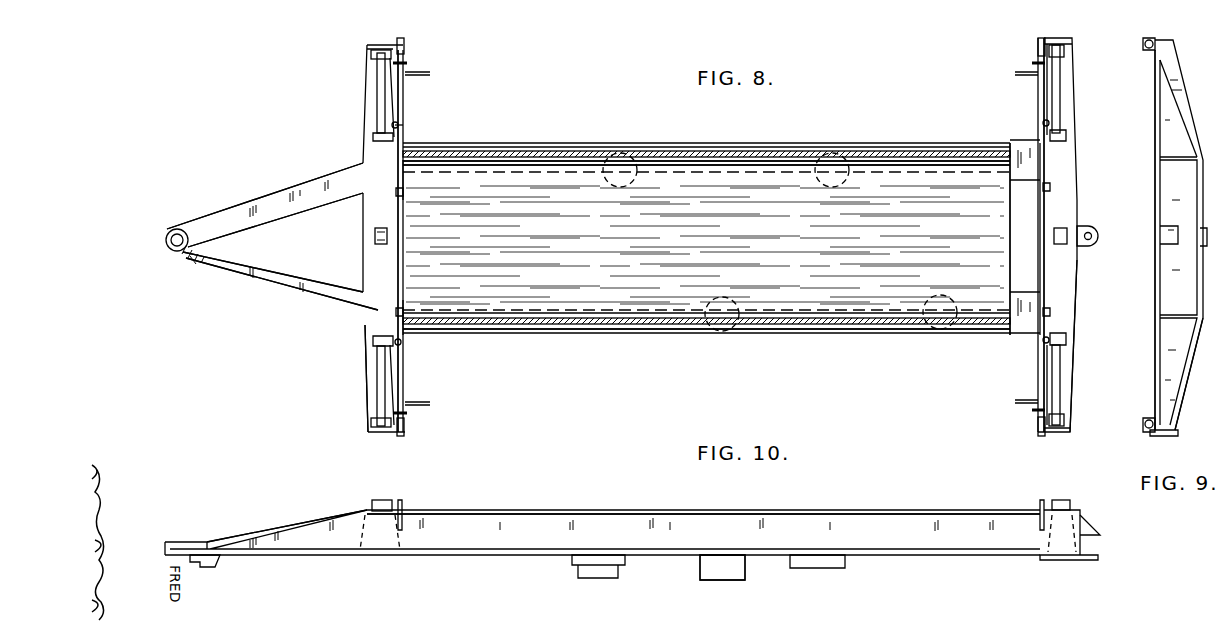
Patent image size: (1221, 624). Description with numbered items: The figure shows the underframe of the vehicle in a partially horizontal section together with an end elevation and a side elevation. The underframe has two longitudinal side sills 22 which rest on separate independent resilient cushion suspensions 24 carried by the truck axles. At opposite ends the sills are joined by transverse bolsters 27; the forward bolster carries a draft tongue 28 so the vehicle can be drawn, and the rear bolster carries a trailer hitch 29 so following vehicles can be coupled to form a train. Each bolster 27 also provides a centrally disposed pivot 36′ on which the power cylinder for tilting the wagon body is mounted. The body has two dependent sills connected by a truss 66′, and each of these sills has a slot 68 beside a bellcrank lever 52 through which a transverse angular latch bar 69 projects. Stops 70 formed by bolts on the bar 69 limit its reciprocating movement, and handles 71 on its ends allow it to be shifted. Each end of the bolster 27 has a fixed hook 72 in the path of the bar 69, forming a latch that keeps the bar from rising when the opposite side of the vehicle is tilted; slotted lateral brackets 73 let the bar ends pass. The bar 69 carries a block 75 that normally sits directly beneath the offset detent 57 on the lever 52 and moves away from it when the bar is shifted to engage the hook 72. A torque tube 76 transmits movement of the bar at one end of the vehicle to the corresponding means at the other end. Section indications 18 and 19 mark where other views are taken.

In FIG. 8, the section line 18 is at (365, 350).
In FIG. 8, the section line 19 is at (563, 285).
In FIG. 8, the side sill 22 is at (1025, 320).
In FIG. 10, the side sill 22 is at (460, 548).
In FIG. 8, the resilient cushion suspension 24 is at (612, 180).
In FIG. 10, the resilient cushion suspension 24 is at (733, 570).
In FIG. 8, the transverse bolster 27 is at (378, 309).
In FIG. 9, the transverse bolster 27 is at (1160, 349).
In FIG. 8, the draft tongue 28 is at (278, 272).
In FIG. 10, the draft tongue 28 is at (313, 545).
In FIG. 8, the trailer hitch 29 is at (1090, 228).
In FIG. 10, the trailer hitch 29 is at (1090, 531).
In FIG. 8, the pivot 36′ is at (375, 234).
In FIG. 10, the pivot 36′ is at (380, 505).
In FIG. 8, the bellcrank lever 52 is at (380, 101).
In FIG. 8, the offset detent 57 is at (398, 138).
In FIG. 8, the truss 66′ is at (878, 190).
In FIG. 8, the slot 68 is at (406, 322).
In FIG. 8, the latch bar 69 is at (405, 103).
In FIG. 8, the stop 70 is at (398, 200).
In FIG. 8, the handle 71 is at (430, 74).
In FIG. 8, the fixed hook 72 is at (405, 45).
In FIG. 9, the fixed hook 72 is at (1143, 42).
In FIG. 8, the lateral bracket 73 is at (407, 63).
In FIG. 8, the block 75 is at (402, 126).
In FIG. 8, the torque tube 76 is at (548, 160).